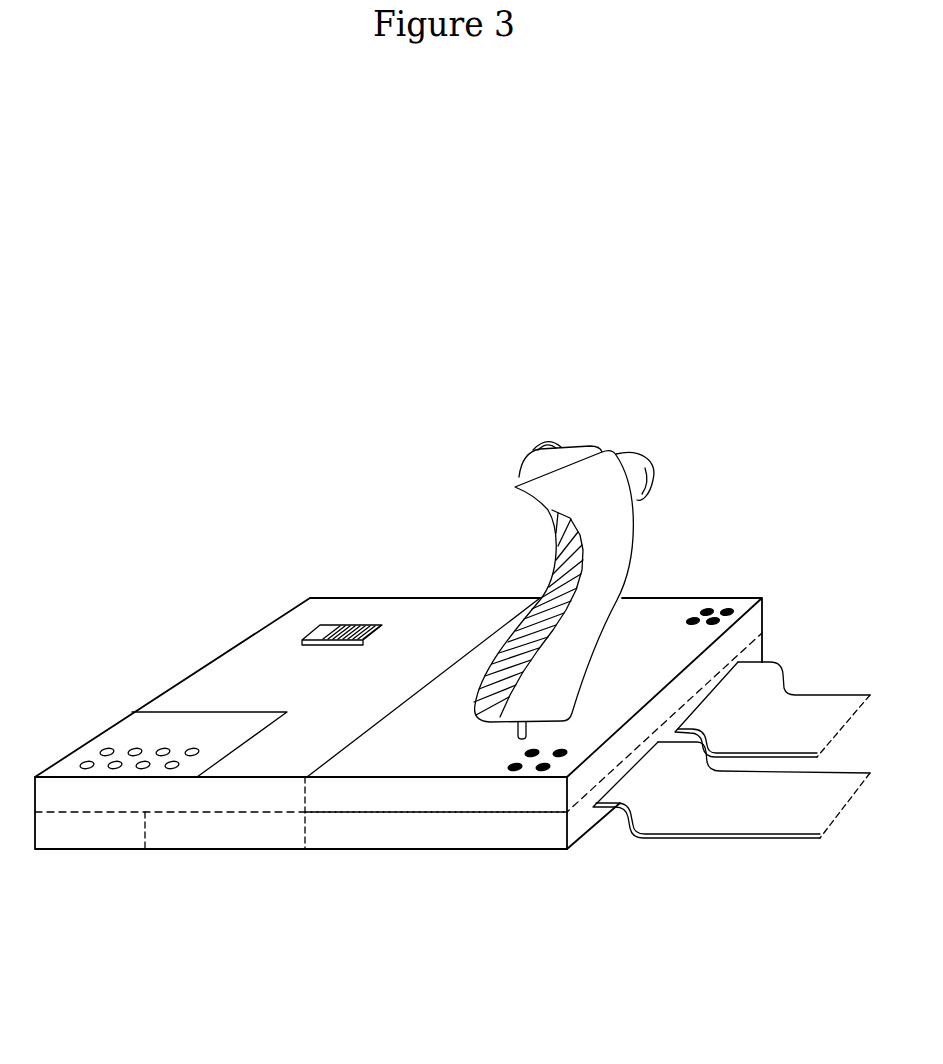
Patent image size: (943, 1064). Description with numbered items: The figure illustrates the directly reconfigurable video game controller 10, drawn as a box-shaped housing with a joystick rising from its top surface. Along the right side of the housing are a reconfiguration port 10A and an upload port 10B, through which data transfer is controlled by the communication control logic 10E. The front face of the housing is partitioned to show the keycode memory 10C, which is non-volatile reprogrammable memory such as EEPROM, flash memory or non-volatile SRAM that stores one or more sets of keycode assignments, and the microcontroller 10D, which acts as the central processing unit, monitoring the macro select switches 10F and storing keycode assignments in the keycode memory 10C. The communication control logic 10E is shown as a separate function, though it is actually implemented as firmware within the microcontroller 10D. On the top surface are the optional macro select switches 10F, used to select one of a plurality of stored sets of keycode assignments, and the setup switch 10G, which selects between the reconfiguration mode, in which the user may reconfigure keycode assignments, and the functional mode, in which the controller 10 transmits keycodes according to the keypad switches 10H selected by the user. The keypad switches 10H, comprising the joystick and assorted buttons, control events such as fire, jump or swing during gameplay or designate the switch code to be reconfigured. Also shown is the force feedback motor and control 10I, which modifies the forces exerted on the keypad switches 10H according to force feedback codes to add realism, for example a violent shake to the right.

The reconfigurable video game controller 10 is at (398, 746).
The reconfiguration port 10A is at (780, 830).
The upload port 10B is at (813, 740).
The keycode memory 10C is at (55, 849).
The microcontroller 10D is at (163, 849).
The communication control logic 10E is at (317, 850).
The macro select switches 10F is at (62, 770).
The setup switch 10G is at (311, 630).
The keypad switches 10H is at (553, 443).
The force feedback motor and control 10I is at (550, 803).